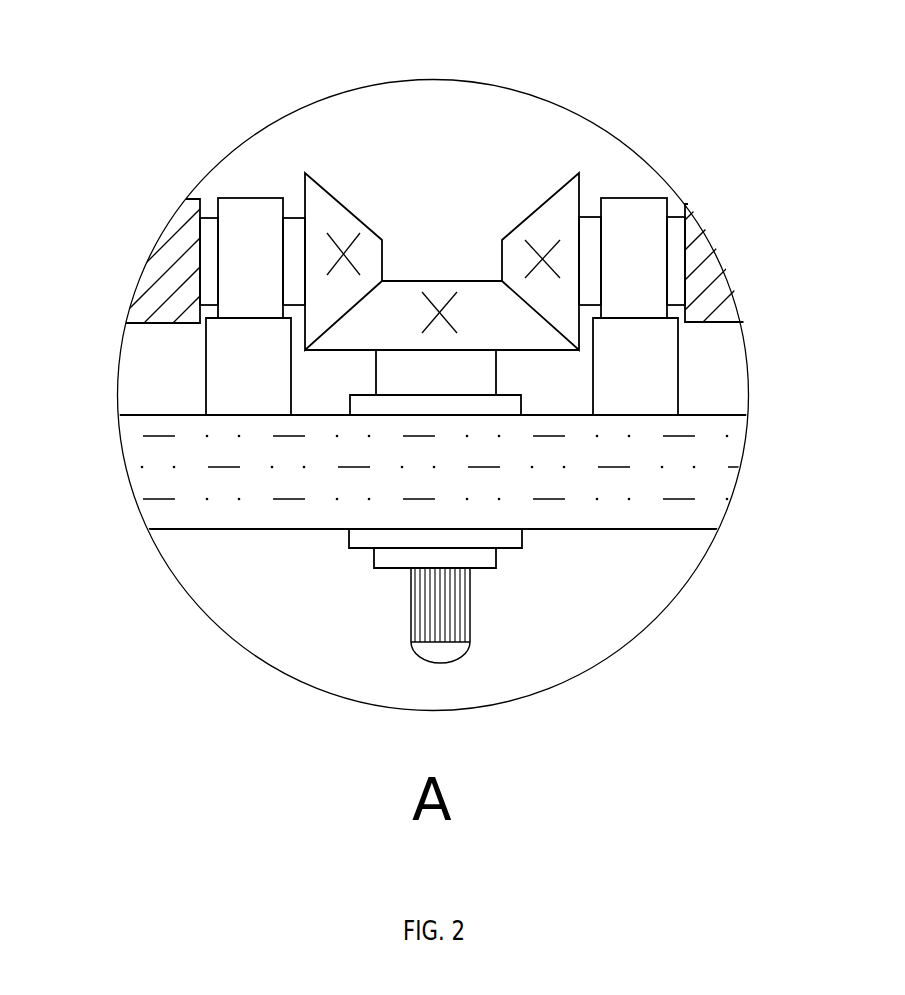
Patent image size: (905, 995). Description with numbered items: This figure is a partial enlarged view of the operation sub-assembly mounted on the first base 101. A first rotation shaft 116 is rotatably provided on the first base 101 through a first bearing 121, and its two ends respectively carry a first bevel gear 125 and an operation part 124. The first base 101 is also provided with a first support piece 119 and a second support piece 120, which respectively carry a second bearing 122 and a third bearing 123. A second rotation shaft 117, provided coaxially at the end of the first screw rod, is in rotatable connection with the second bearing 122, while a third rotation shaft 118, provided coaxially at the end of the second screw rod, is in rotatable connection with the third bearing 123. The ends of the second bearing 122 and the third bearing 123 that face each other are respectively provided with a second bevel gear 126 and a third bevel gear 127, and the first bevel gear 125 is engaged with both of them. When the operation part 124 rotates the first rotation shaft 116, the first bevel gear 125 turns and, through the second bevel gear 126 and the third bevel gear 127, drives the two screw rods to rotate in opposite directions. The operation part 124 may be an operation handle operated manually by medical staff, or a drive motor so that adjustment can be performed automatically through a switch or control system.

The first base 101 is at (204, 498).
The first rotation shaft 116 is at (393, 556).
The second rotation shaft 117 is at (297, 240).
The third rotation shaft 118 is at (593, 262).
The first support piece 119 is at (235, 373).
The second support piece 120 is at (650, 378).
The first bearing 121 is at (379, 406).
The second bearing 122 is at (258, 245).
The third bearing 123 is at (648, 287).
The operation part 124 is at (449, 611).
The first bevel gear 125 is at (456, 333).
The second bevel gear 126 is at (317, 205).
The third bevel gear 127 is at (560, 240).